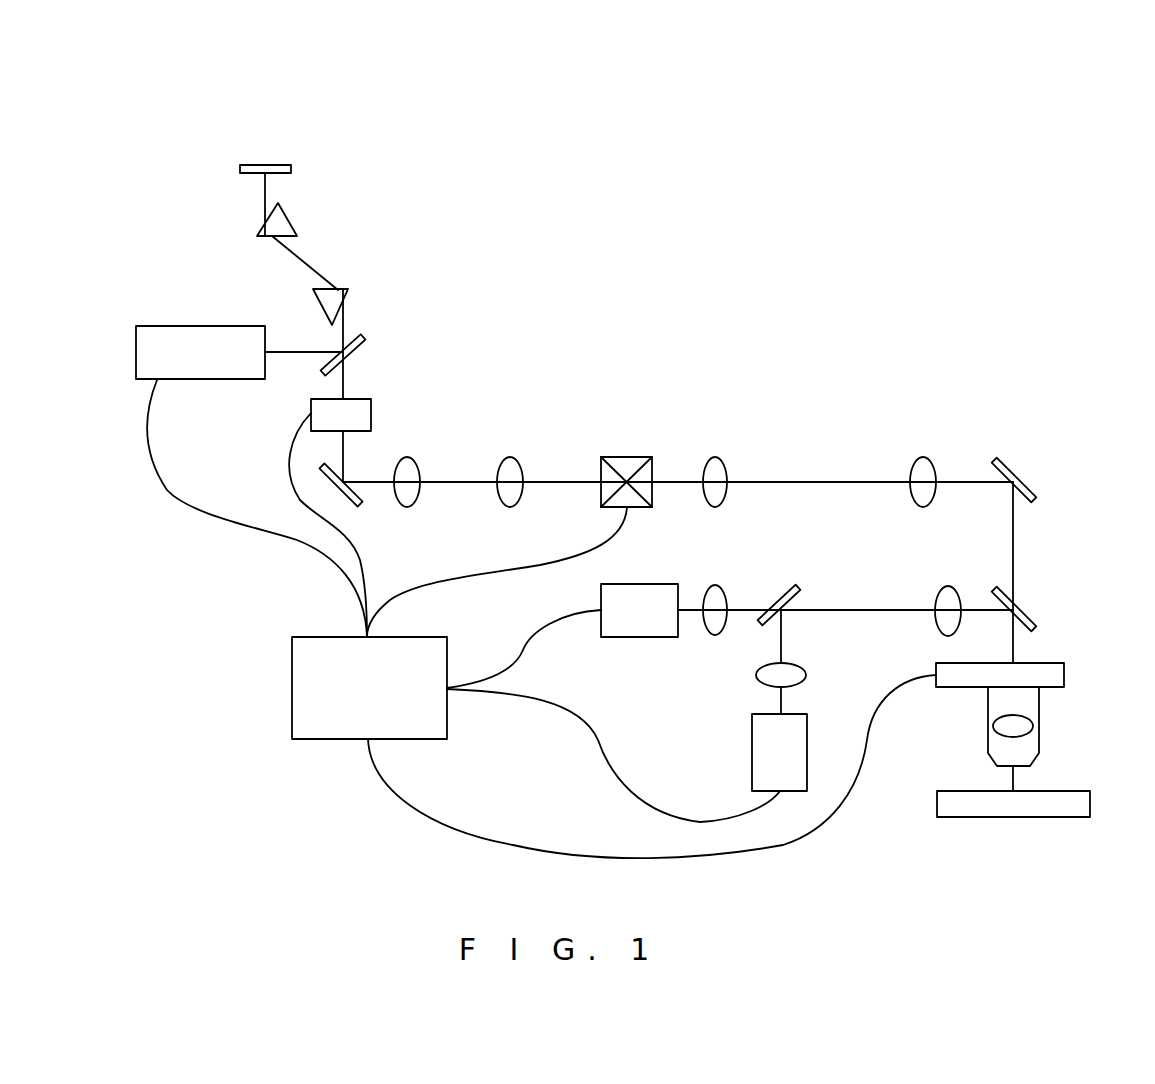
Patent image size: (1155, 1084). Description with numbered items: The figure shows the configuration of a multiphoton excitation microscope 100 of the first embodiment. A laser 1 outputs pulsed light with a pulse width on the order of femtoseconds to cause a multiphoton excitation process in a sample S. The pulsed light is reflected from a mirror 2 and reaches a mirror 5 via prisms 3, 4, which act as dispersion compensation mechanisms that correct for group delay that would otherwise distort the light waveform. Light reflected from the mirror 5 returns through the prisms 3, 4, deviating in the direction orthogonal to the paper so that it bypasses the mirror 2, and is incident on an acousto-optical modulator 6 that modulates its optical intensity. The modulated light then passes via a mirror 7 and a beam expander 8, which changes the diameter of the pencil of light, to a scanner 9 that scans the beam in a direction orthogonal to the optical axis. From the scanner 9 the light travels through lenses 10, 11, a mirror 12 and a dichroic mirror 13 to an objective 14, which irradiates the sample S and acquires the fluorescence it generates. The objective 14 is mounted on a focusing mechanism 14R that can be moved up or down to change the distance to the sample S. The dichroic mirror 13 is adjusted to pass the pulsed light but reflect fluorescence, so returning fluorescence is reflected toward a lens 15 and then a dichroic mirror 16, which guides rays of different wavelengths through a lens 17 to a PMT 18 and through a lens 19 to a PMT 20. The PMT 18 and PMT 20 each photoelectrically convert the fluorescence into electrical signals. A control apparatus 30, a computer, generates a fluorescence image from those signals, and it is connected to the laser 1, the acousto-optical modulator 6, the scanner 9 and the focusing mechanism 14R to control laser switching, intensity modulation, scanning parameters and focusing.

The multiphoton excitation microscope 100 is at (103, 70).
The laser 1 is at (176, 326).
The mirror 2 is at (366, 352).
The prism 3 is at (352, 297).
The prism 4 is at (292, 222).
The mirror 5 is at (292, 167).
The acousto-optical modulator 6 is at (372, 400).
The mirror 7 is at (362, 505).
The beam expander 8 is at (522, 445).
The scanner 9 is at (617, 457).
The lens 10 is at (719, 457).
The lens 11 is at (925, 457).
The mirror 12 is at (1001, 457).
The dichroic mirror 13 is at (1027, 600).
The objective 14 is at (1040, 712).
The focusing mechanism 14R is at (1065, 676).
The lens 15 is at (951, 588).
The dichroic mirror 16 is at (789, 585).
The lens 17 is at (719, 585).
The PMT 18 is at (652, 584).
The lens 19 is at (804, 666).
The PMT 20 is at (807, 722).
The control apparatus 30 is at (291, 671).
The sample S is at (1058, 790).